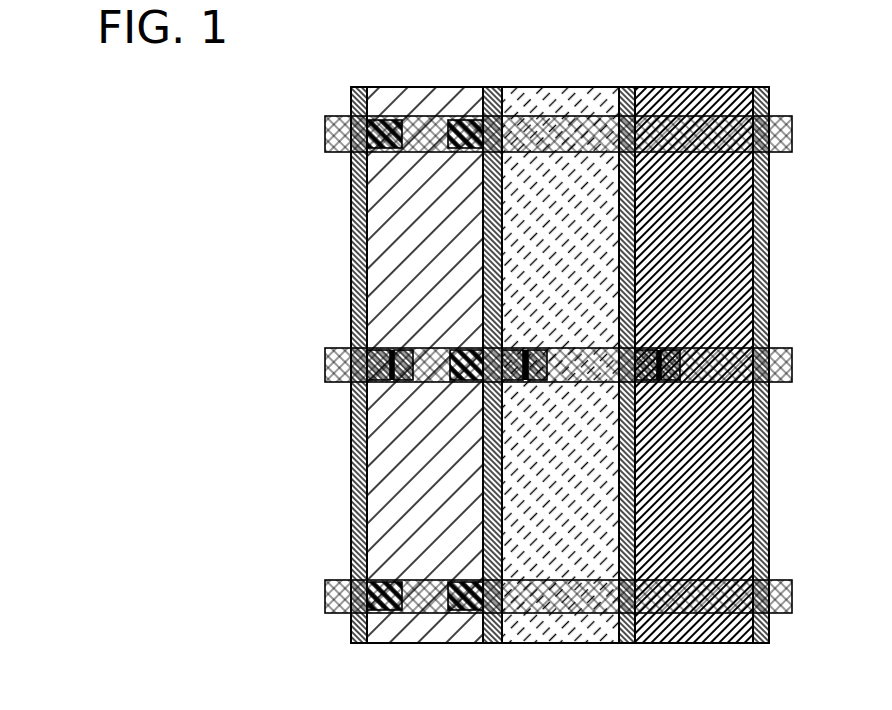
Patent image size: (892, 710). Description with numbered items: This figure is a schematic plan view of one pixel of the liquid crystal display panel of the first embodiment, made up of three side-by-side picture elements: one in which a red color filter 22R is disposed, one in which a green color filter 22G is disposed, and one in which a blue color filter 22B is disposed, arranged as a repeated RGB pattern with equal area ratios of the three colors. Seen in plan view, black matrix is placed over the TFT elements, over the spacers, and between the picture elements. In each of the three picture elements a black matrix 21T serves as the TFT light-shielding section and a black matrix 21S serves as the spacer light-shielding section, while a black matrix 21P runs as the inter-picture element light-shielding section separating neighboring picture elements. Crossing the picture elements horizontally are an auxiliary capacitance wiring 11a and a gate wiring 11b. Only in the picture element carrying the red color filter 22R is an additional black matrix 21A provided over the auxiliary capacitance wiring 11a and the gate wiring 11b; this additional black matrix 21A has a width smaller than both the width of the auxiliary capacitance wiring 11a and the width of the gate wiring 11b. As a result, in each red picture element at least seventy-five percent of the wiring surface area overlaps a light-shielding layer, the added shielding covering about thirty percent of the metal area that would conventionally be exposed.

The auxiliary capacitance wiring 11a is at (325, 133).
The gate wiring 11b is at (325, 365).
The black matrix (inter-picture element light-shielding section) 21P is at (351, 224).
The black matrix (TFT light-shielding section) 21T is at (378, 348).
The black matrix (spacer light-shielding section) 21S is at (402, 382).
The additional black matrix 21A is at (383, 611).
The red color filter 22R is at (426, 97).
The green color filter 22G is at (559, 97).
The blue color filter 22B is at (692, 97).